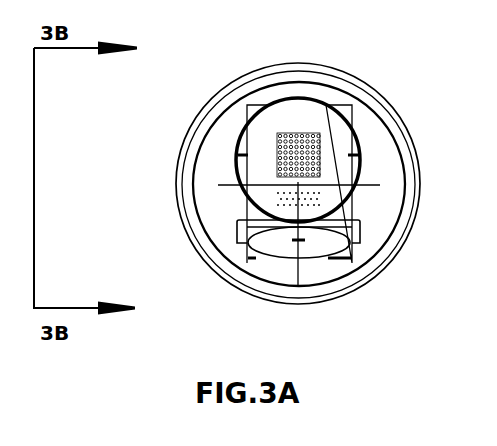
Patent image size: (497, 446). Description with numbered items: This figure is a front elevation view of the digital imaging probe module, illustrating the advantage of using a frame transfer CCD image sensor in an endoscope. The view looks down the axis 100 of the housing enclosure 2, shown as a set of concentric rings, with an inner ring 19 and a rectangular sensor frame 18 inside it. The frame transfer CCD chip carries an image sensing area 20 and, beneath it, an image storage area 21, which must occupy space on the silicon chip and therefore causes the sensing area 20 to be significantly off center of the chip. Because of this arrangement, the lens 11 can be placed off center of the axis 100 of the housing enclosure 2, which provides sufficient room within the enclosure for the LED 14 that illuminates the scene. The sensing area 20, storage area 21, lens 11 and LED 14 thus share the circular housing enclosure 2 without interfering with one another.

The housing enclosure 2 is at (184, 227).
The ring 19 is at (396, 143).
The rectangular frame 18 is at (249, 105).
The image storage area 21 is at (240, 177).
The image sensing area 20 is at (311, 136).
The axis 100 is at (297, 186).
The lens 11 is at (360, 168).
The LED 14 is at (333, 249).